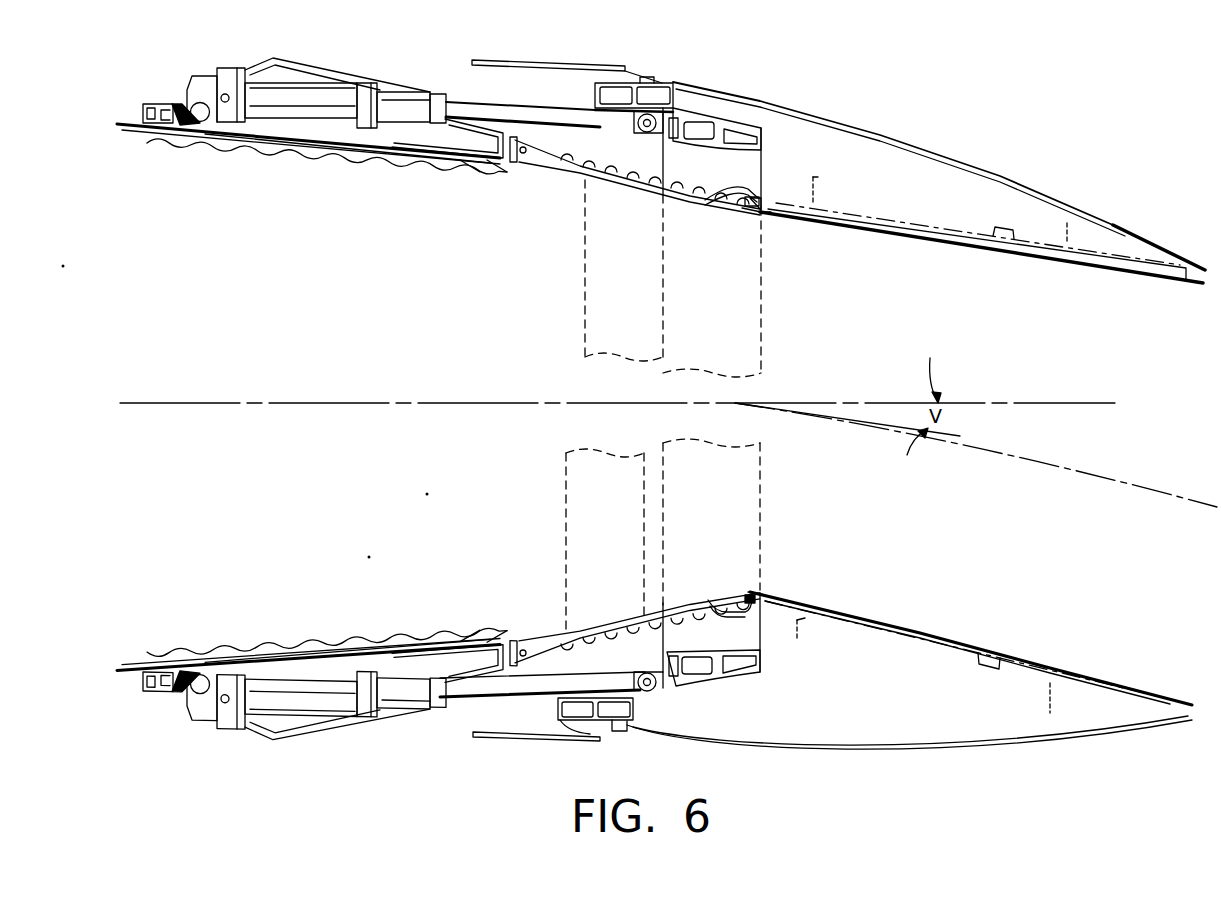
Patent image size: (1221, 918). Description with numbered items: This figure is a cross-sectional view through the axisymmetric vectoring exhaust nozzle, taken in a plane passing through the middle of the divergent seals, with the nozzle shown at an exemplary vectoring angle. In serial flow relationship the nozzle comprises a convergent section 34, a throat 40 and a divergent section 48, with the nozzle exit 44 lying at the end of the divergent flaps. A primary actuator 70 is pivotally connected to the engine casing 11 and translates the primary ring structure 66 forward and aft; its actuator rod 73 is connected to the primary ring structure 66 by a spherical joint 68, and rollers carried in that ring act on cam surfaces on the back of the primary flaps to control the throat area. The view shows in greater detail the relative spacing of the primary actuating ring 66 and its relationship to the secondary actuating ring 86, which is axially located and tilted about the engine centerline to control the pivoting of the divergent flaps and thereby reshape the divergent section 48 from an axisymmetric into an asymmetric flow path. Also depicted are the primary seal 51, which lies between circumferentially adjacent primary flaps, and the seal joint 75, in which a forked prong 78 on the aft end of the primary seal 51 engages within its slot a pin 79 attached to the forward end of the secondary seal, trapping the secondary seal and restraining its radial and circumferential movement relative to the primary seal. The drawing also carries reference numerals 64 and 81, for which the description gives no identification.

The engine casing 11 is at (127, 123).
The primary actuator 70 is at (293, 114).
The actuator rod 73 is at (518, 100).
The secondary actuating ring 86 is at (650, 82).
The spherical joint 68 is at (648, 135).
The primary ring structure 66 is at (763, 128).
The forked prong 78 is at (738, 196).
The pin 79 is at (762, 185).
The upper skin panel 64 is at (990, 170).
The primary seal 51 is at (648, 192).
The seal joint 75 is at (740, 216).
The hinge bracket 81 is at (770, 213).
The throat 40 is at (761, 222).
The nozzle exit 44 is at (1196, 290).
The convergent section 34 is at (629, 396).
The divergent section 48 is at (1000, 519).